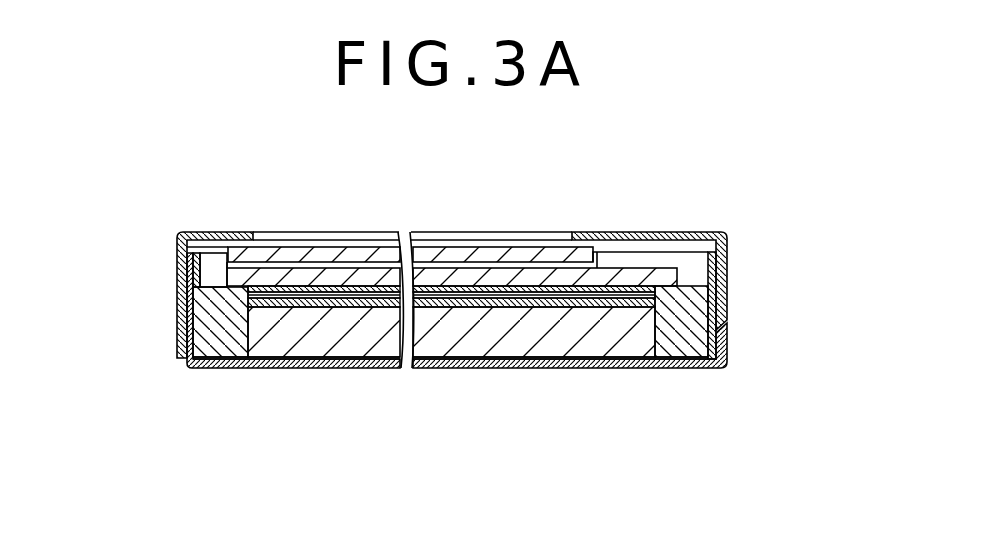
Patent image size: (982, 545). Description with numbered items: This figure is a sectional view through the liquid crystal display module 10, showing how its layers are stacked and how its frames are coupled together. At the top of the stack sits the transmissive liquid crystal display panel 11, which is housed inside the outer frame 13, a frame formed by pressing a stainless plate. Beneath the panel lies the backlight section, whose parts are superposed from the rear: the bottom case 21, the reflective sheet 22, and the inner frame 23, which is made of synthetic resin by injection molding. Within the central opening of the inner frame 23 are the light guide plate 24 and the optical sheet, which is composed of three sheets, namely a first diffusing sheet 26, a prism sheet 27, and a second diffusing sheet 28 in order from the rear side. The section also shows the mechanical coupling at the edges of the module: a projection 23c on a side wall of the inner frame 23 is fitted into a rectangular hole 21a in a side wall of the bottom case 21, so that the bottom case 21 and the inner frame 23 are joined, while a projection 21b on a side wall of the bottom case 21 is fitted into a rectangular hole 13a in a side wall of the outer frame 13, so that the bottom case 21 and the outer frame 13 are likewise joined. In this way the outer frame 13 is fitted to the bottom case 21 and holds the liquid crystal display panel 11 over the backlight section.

The liquid crystal display module 10 is at (166, 188).
The liquid crystal display panel 11 is at (502, 247).
The outer frame 13 is at (613, 232).
The rectangular hole 13a is at (727, 307).
The bottom case 21 is at (293, 368).
The rectangular hole 21a is at (182, 326).
The projection 21b is at (727, 328).
The reflective sheet 22 is at (356, 362).
The inner frame 23 is at (227, 337).
The projection 23c is at (185, 322).
The light guide plate 24 is at (443, 328).
The first diffusing sheet 26 is at (498, 302).
The prism sheet 27 is at (545, 295).
The second diffusing sheet 28 is at (597, 289).